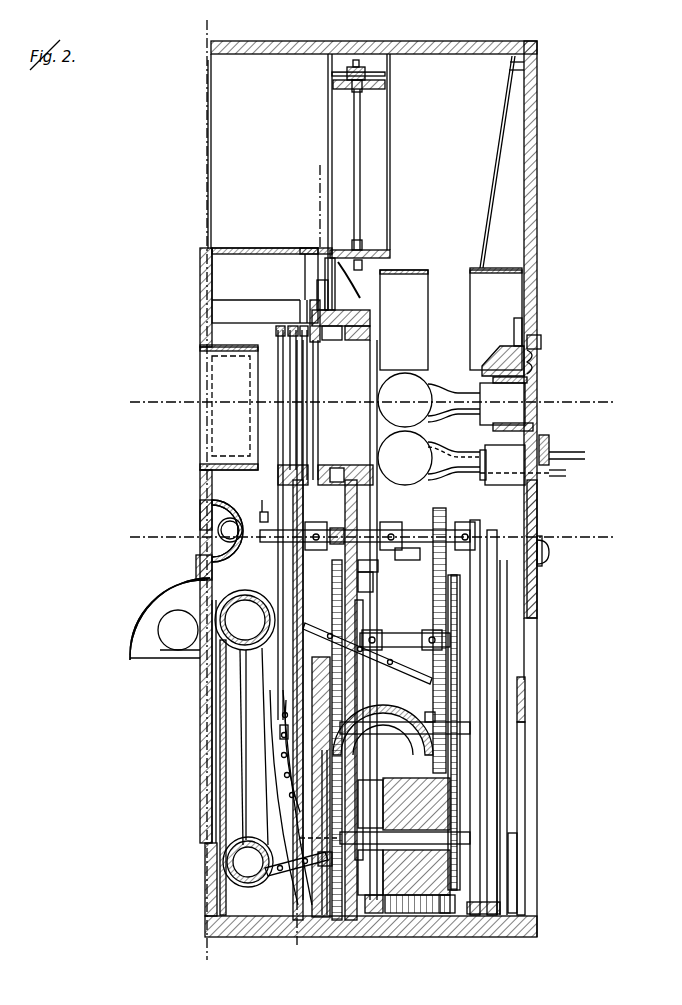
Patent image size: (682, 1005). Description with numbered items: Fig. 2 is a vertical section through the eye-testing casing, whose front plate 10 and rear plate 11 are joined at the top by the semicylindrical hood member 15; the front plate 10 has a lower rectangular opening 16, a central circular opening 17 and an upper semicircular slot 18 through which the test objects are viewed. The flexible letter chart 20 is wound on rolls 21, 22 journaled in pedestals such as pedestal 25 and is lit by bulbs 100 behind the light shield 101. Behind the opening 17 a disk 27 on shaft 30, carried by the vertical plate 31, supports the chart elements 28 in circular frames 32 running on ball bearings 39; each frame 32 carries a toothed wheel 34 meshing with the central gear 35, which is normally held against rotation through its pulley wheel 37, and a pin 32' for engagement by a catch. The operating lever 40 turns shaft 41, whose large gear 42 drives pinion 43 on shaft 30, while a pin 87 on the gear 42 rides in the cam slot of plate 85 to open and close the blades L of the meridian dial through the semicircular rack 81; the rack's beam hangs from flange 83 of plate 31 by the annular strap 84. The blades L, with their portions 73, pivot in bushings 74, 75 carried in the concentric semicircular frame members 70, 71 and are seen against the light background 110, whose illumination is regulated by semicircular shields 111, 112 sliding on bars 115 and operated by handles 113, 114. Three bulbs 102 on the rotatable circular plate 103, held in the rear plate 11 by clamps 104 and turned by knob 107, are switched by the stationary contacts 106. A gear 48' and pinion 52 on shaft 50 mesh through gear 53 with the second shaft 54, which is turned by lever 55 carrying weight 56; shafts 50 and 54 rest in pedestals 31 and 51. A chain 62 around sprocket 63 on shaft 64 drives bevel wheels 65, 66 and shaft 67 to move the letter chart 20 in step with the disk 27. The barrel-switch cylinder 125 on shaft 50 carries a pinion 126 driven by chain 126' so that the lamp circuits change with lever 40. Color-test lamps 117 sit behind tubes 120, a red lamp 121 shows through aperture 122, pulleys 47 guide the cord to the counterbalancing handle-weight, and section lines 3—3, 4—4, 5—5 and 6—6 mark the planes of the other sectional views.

The section line 6— 6 is at (220, 955).
The section line 5— 5 is at (303, 952).
The section line 3— 3 is at (599, 408).
The section line 4— 4 is at (599, 543).
The semicylindrical cover or hood member 15 is at (300, 46).
The semicircular rack member 81 is at (386, 76).
The semicircular frame member 71 is at (387, 88).
The bushing 75 is at (346, 90).
The blades of the meridian dial L is at (366, 150).
The blade portion 73 is at (360, 178).
The light background 110 is at (505, 128).
The rear face (back plate) of the casing 11 is at (538, 180).
The upper opening 18 is at (214, 216).
The small electric lamps 117 is at (303, 250).
The bushing 74 is at (368, 246).
The semicircular frame member 70 is at (392, 252).
The semicircular light shield 111 is at (428, 274).
The semicircular light shield 112 is at (526, 270).
The tubes 120 is at (228, 305).
The front face (front plate) of the casing 10 is at (205, 296).
The chart elements 28 is at (278, 335).
The toothed wheel 34 is at (303, 335).
The ball bearings 39 is at (294, 320).
The annular strap 84 is at (368, 326).
The flange 83 is at (376, 340).
The stationary contacts 106 is at (538, 323).
The bulbs 102 is at (425, 442).
The bars 115 is at (458, 420).
The pin 32' is at (340, 410).
The central circular opening 17 is at (208, 438).
The circular frames 32 is at (269, 464).
The knob 107 is at (550, 446).
The handle 114 is at (570, 458).
The handle 113 is at (566, 473).
The pulleys 47 is at (330, 482).
The small view aperture 122 is at (204, 522).
The single lamp 121 is at (228, 524).
The rotatable shaft 30 is at (365, 537).
The pin 87 is at (405, 556).
The pinion 43 is at (446, 522).
The circular plate 103 is at (540, 510).
The clamps 104 is at (545, 548).
The light shield 101 is at (150, 604).
The central gear wheel 35 is at (292, 592).
The plate 85 is at (345, 585).
The pulley wheel 37 is at (358, 580).
The vertically disposed plate or bracket (pedestal) 31 is at (346, 612).
The large gear 42 is at (450, 612).
The shaft 41 is at (400, 640).
The bulbs 100 is at (165, 632).
The roll 21 is at (205, 655).
The chain 126' is at (540, 722).
The letter chart 20 is at (238, 690).
The operating lever 40 is at (524, 700).
The lower rectangular opening 16 is at (212, 720).
The sprocket wheel 63 is at (283, 730).
The second shaft 54 is at (525, 742).
The operating lever 55 is at (508, 776).
The disk 27 is at (275, 762).
The bevel wheel 65 is at (370, 706).
The second bevel wheel 66 is at (398, 716).
The shaft 67 is at (432, 720).
The pedestal 25 is at (245, 770).
The gear 53 is at (336, 790).
The pedestal 51 is at (497, 798).
The shaft 50 is at (470, 836).
The shaft 64 is at (404, 845).
The chain 62 is at (222, 812).
The roll 22 is at (225, 866).
The weight 56 is at (530, 876).
The pinion 52 is at (318, 868).
The gear 48' is at (314, 872).
The cylinder of insulating material 125 is at (378, 900).
The pinion 126 is at (462, 933).